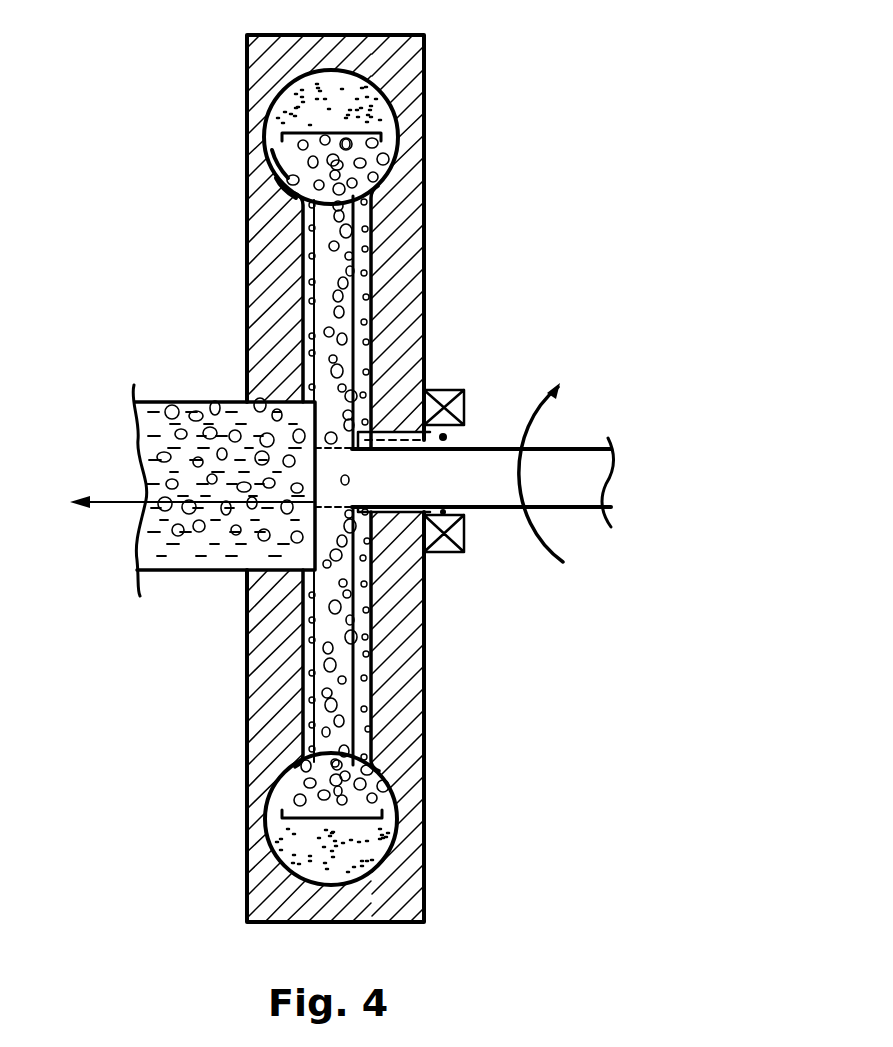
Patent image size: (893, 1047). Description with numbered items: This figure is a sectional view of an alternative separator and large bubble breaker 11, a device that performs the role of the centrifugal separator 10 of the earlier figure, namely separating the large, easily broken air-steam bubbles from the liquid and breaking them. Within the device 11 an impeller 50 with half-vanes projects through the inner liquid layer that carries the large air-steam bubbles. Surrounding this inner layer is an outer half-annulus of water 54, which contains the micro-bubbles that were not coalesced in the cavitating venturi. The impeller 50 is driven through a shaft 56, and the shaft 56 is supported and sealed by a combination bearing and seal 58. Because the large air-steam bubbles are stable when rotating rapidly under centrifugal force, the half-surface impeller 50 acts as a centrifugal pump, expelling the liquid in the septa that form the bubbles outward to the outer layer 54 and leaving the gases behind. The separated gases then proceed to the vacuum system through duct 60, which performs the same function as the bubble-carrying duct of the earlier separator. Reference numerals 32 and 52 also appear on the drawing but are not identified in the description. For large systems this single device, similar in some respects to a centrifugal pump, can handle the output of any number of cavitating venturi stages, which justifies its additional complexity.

The centrifugal separator 10 is at (446, 800).
The alternative separator and large bubble breaker 11 is at (425, 662).
The direction of flow 32 is at (191, 473).
The impeller 50 is at (363, 257).
The lower bulbous cavity 52 is at (425, 757).
The outer half-annulus of water 54 is at (347, 113).
The shaft 56 is at (650, 373).
The combination bearing and seal 58 is at (470, 407).
The duct 60 is at (233, 573).